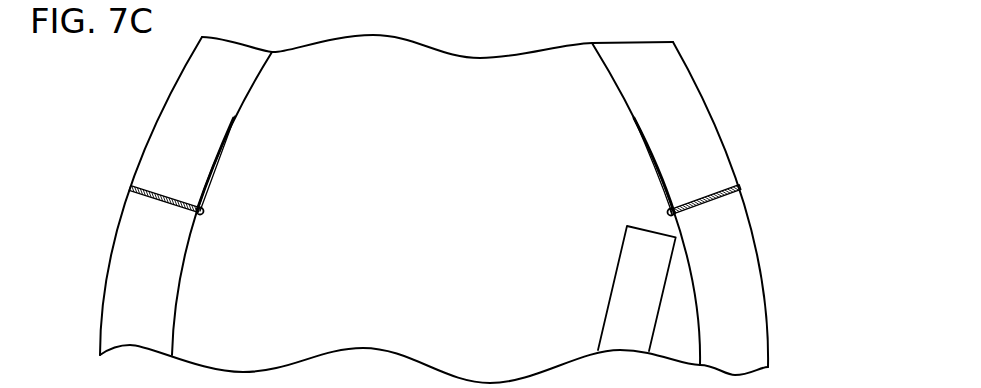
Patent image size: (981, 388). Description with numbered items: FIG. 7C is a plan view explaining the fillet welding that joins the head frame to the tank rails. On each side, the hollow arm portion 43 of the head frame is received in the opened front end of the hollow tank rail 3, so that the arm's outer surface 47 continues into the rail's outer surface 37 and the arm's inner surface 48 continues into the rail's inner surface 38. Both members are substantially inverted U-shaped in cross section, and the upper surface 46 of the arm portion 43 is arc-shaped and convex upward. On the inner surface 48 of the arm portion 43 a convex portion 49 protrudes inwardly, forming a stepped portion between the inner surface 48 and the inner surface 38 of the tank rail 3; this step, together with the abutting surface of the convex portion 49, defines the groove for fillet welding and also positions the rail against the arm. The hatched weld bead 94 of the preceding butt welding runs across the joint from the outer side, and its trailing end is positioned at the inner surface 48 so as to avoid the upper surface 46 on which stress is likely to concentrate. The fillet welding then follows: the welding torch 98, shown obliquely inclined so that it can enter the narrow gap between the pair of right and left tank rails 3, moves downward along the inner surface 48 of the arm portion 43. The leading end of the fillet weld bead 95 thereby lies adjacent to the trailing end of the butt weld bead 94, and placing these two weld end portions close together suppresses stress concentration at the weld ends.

The tank rail 3 is at (118, 250).
The outer surface of the tank rail 37 is at (120, 226).
The inner surface of the tank rail 38 is at (184, 249).
The arm portion 43 is at (172, 124).
The upper surface of the arm portion 46 is at (697, 120).
The outer surface of the arm portion 47 is at (145, 150).
The inner surface of the arm portion 48 is at (216, 150).
The convex portion 49 is at (211, 183).
The weld bead of the butt welding 94 is at (128, 188).
The weld bead of the fillet welding 95 is at (204, 210).
The welding torch 98 is at (617, 318).